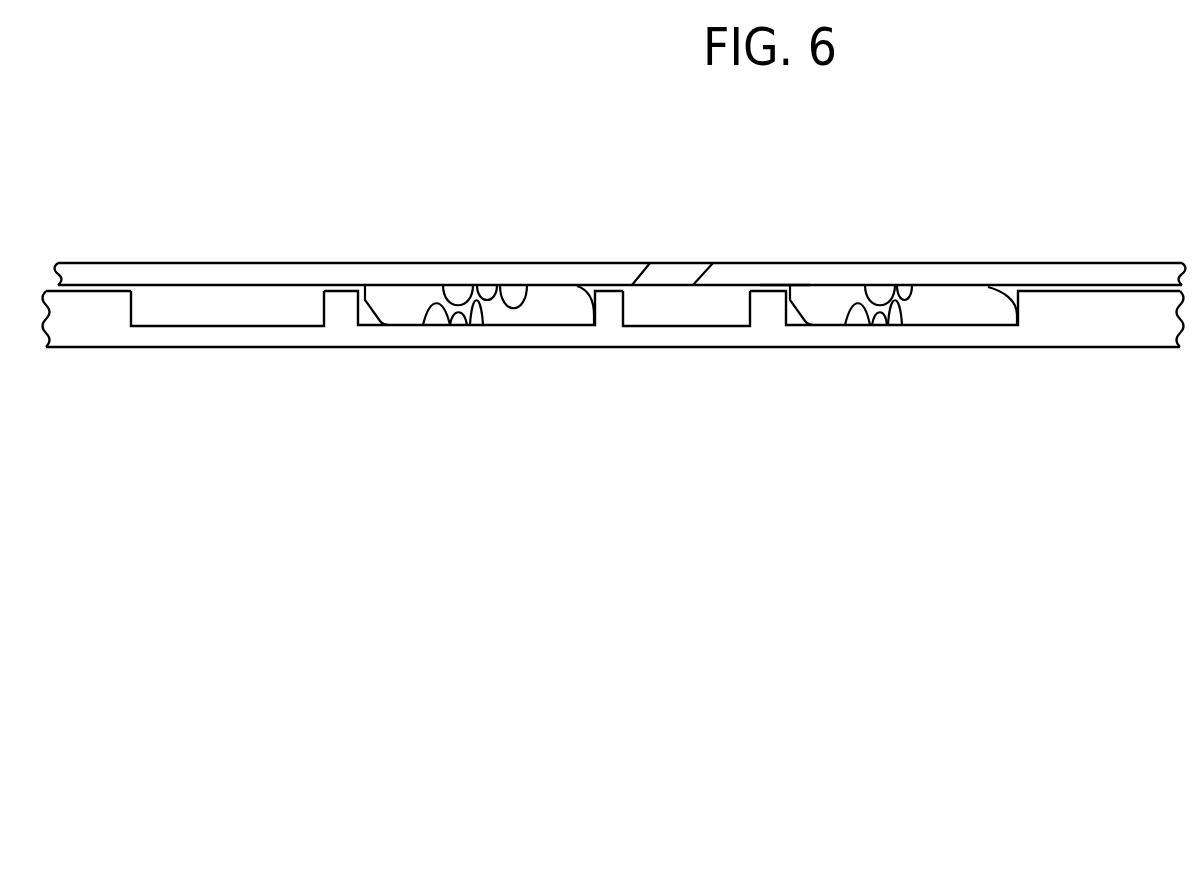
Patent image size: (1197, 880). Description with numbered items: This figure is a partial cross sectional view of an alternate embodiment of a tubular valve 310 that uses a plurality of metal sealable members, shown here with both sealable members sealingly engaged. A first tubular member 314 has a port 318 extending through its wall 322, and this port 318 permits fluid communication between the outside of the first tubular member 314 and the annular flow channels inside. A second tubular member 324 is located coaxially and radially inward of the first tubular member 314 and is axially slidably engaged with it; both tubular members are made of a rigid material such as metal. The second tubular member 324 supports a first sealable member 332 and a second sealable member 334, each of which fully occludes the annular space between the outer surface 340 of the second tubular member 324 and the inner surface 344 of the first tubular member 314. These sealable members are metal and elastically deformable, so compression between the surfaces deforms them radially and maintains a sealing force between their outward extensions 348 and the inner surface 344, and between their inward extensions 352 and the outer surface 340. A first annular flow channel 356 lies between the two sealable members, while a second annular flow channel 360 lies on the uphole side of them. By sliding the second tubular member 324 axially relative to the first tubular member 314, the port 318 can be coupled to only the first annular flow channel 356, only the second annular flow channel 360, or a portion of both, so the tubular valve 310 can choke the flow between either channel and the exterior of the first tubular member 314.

The tubular valve 310 is at (1065, 97).
The first tubular member 314 is at (1075, 262).
The port 318 is at (708, 272).
The wall 322 is at (785, 275).
The second tubular member 324 is at (1067, 347).
The first sealable member 332 is at (857, 322).
The second sealable member 334 is at (425, 318).
The outer surface 340 is at (486, 321).
The inner surface 344 is at (581, 293).
The outward extensions 348 is at (470, 287).
The inward extensions 352 is at (470, 327).
The first annular flow channel 356 is at (727, 316).
The second annular flow channel 360 is at (257, 315).